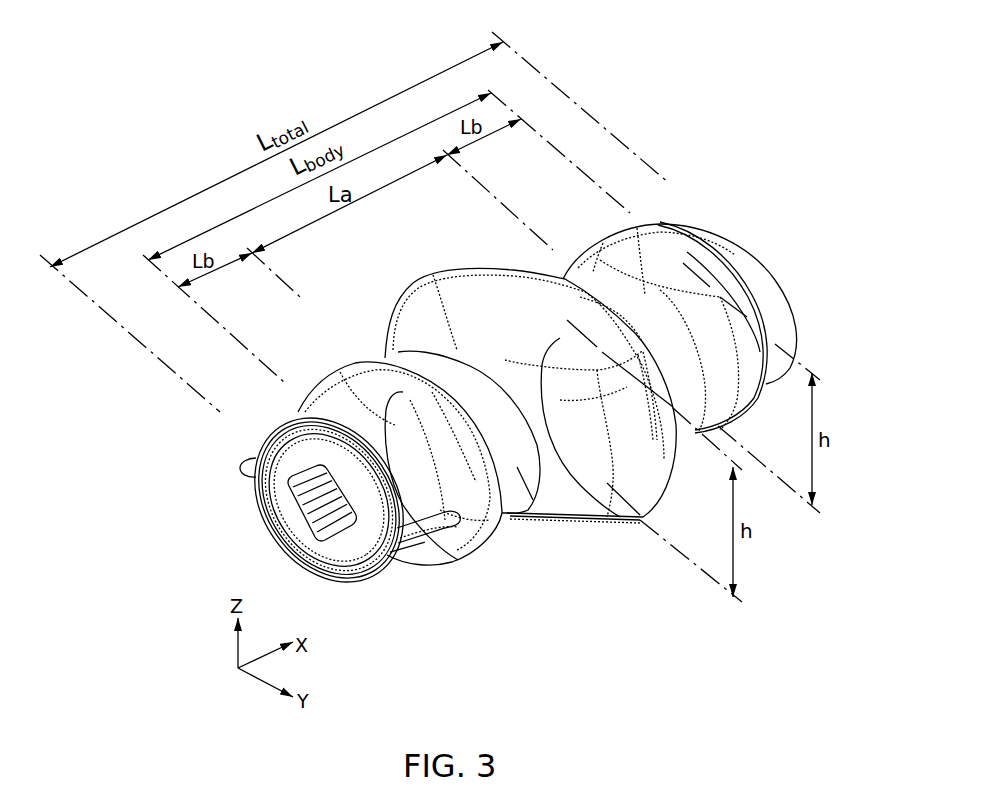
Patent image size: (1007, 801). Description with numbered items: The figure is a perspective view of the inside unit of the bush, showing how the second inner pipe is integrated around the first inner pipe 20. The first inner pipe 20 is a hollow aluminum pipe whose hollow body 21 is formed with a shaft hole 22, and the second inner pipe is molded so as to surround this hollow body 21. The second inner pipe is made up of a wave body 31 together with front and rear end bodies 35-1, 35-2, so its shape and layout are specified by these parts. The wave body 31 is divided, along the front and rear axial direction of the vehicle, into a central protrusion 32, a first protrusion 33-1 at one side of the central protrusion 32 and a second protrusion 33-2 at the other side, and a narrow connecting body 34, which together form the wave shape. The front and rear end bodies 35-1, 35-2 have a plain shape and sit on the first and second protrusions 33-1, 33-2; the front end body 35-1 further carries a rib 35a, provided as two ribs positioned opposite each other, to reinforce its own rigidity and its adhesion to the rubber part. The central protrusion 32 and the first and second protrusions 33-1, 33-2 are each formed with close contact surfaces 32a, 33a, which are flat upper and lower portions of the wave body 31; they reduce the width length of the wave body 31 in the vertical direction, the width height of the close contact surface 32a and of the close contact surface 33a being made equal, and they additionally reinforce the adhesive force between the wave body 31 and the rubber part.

The first inner pipe 20 is at (280, 500).
The hollow body 21 is at (307, 528).
The shaft hole 22 is at (307, 495).
The wave body 31 is at (530, 187).
The central protrusion 32 is at (507, 290).
The close contact surface 32a is at (418, 498).
The first protrusion 33-1 is at (363, 380).
The second protrusion 33-2 is at (630, 242).
The close contact surface 33a is at (688, 255).
The narrow connecting body 34 is at (700, 367).
The front end body 35-1 is at (298, 412).
The rear end body 35-2 is at (762, 267).
The rib 35a is at (243, 460).